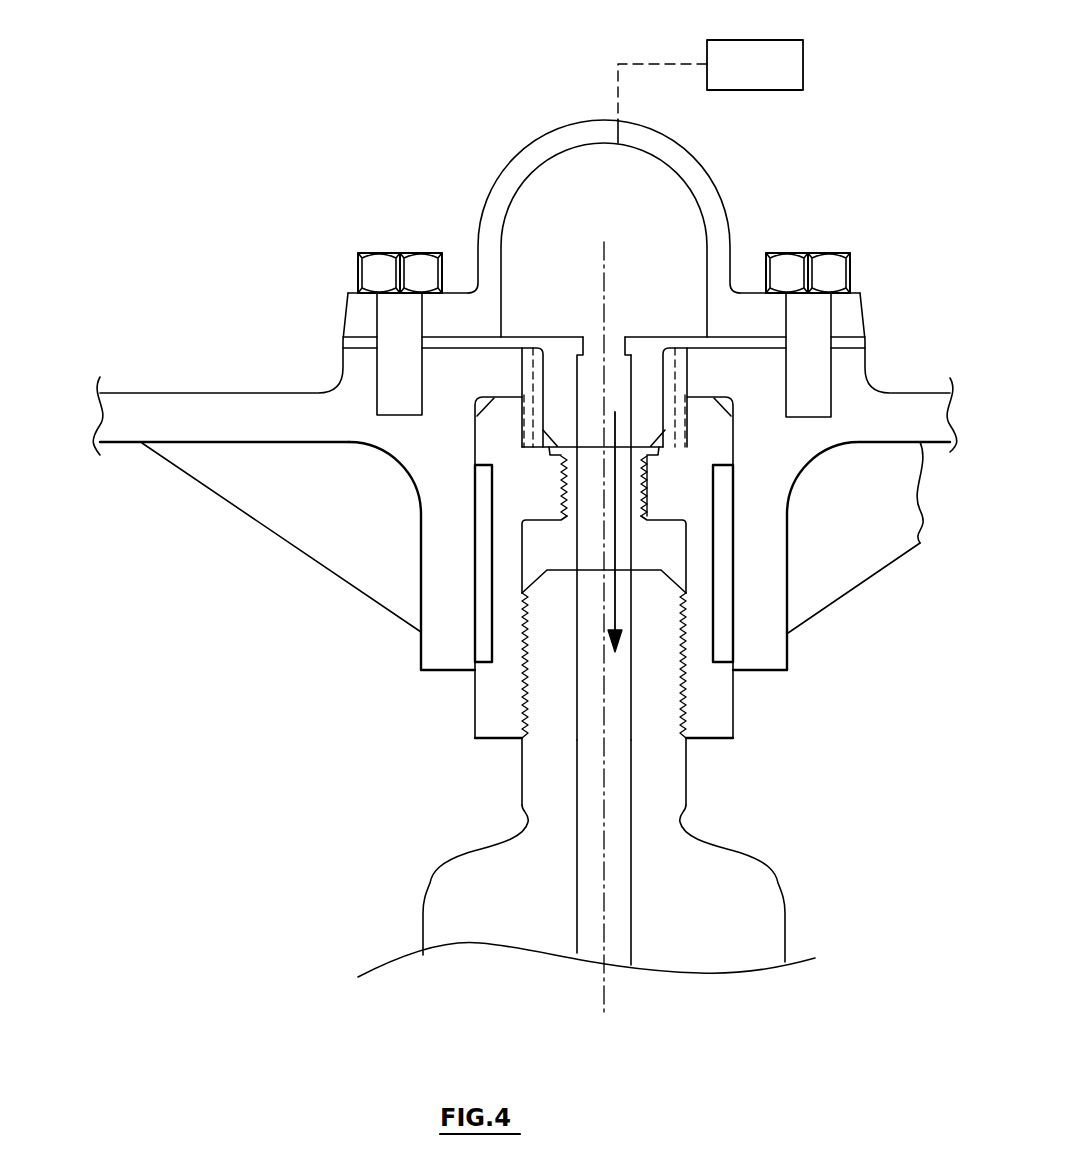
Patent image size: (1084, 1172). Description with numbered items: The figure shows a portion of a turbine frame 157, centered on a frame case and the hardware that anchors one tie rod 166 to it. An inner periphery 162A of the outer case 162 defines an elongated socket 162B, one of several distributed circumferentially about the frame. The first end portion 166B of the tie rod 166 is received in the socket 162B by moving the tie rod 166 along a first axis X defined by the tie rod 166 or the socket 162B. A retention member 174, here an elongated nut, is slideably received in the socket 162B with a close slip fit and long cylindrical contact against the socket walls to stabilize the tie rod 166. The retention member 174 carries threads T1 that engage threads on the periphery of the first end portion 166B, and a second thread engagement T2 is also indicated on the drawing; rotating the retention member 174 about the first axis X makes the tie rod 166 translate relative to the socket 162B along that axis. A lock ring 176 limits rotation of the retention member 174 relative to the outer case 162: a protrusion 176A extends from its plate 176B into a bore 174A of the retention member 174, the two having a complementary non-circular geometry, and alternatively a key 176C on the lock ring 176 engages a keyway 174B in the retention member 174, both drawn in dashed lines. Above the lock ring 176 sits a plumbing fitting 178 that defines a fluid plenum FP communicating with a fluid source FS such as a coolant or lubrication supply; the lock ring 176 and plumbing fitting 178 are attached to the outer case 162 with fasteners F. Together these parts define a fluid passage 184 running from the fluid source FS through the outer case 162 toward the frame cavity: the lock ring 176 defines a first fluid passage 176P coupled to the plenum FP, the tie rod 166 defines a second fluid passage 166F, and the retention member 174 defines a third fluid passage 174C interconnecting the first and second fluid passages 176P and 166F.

The turbine frame 157 is at (130, 100).
The outer case 162 is at (208, 348).
The inner periphery 162A is at (122, 445).
The socket 162B is at (734, 535).
The tie rod 166 is at (778, 830).
The first end portion 166B is at (687, 782).
The second fluid passage 166F is at (630, 900).
The retention member 174 is at (725, 717).
The bore 174A is at (662, 410).
The keyway 174B is at (523, 430).
The third fluid passage 174C is at (633, 498).
The lock ring 176 is at (740, 290).
The protrusion 176A is at (652, 378).
The plate 176B is at (636, 330).
The key 176C is at (530, 412).
The first fluid passage 176P is at (627, 375).
The plumbing fitting 178 is at (715, 180).
The fluid passage 184 is at (617, 605).
The fastener F is at (368, 253).
The fluid source FS is at (771, 80).
The fluid plenum FP is at (620, 218).
The threads T1 is at (522, 685).
The second threads T2 is at (563, 490).
The first axis X is at (606, 1008).